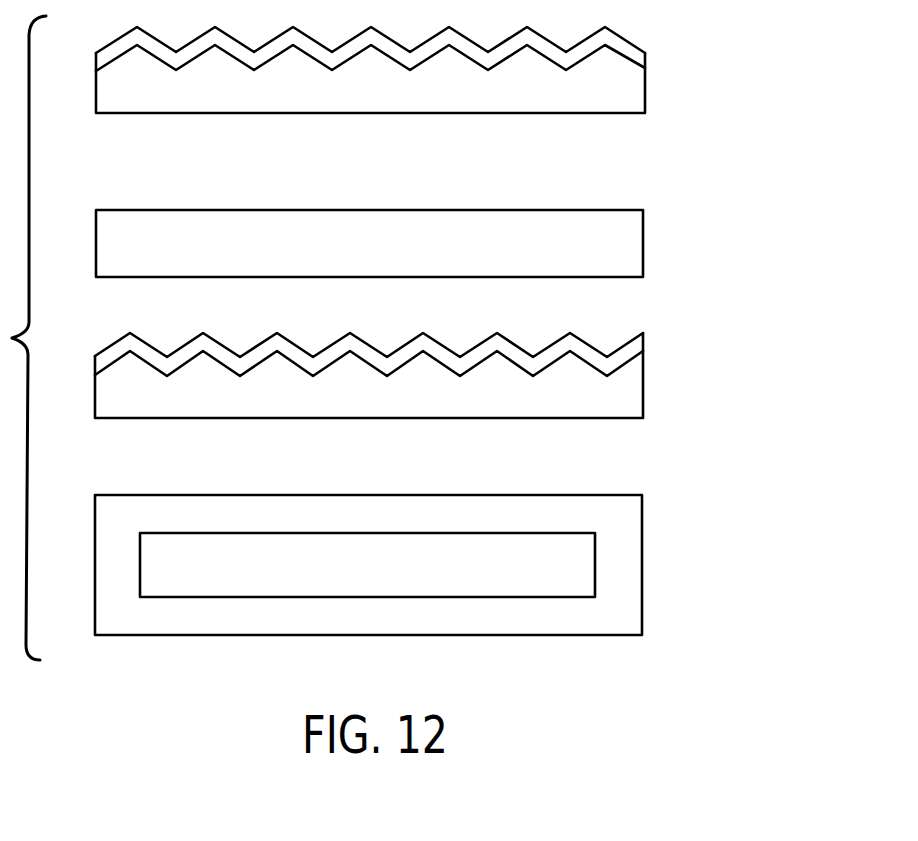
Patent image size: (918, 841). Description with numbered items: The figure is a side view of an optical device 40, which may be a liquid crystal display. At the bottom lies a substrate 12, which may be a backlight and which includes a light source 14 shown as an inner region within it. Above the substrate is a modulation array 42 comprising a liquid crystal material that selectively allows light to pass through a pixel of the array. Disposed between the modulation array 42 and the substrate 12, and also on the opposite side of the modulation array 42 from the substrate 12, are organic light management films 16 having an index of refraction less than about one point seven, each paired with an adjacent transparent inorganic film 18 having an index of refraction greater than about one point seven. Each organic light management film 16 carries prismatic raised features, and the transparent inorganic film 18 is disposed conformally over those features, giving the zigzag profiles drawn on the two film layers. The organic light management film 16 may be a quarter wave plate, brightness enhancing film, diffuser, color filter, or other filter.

The substrate 12 is at (632, 598).
The light source 14 is at (510, 588).
The organic light management film 16 is at (638, 98).
The transparent inorganic film 18 is at (638, 59).
The optical device 40 is at (723, 338).
The modulation array 42 is at (638, 239).